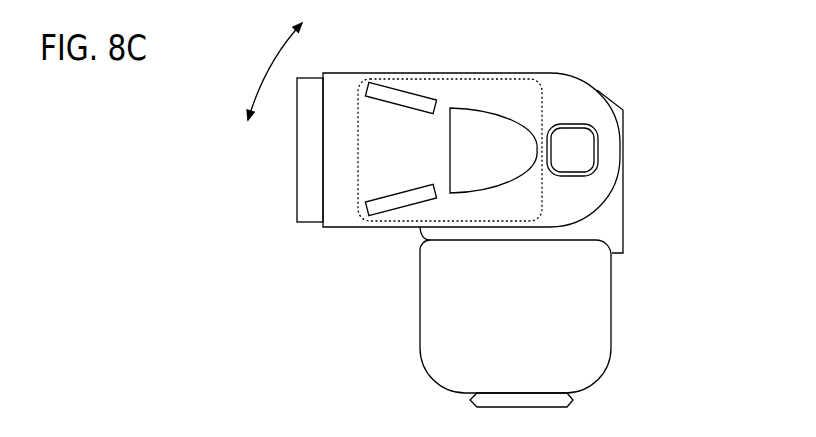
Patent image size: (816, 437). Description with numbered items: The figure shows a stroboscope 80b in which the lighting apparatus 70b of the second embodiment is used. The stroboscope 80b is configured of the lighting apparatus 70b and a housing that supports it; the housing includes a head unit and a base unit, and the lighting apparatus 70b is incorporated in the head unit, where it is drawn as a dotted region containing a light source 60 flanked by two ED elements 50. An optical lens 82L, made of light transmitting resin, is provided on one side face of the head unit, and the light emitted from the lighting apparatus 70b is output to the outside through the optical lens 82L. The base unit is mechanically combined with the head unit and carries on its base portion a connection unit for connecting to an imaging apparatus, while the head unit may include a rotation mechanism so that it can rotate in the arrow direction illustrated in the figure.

The ED element 50 is at (391, 149).
The light source 60 is at (476, 119).
The lighting apparatus 70b is at (528, 215).
The stroboscope 80b is at (665, 403).
The optical lens 82L is at (264, 150).